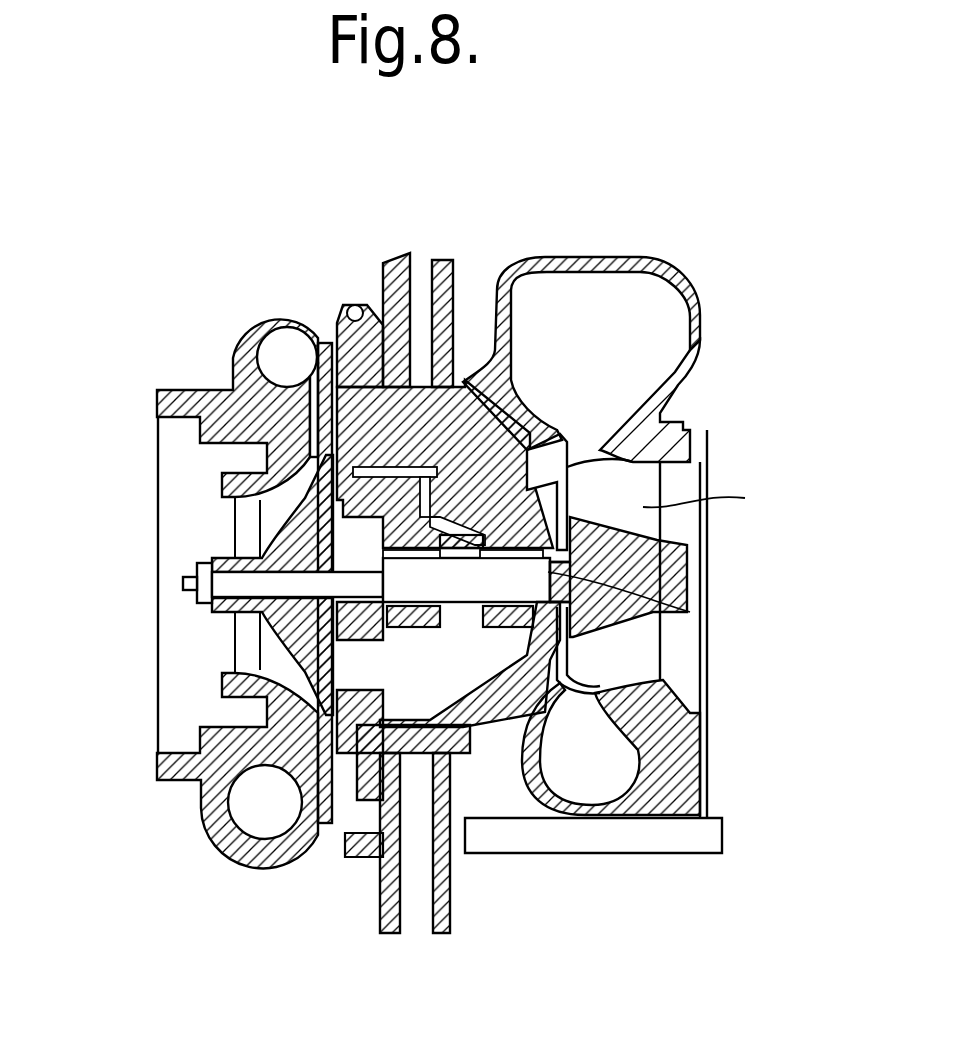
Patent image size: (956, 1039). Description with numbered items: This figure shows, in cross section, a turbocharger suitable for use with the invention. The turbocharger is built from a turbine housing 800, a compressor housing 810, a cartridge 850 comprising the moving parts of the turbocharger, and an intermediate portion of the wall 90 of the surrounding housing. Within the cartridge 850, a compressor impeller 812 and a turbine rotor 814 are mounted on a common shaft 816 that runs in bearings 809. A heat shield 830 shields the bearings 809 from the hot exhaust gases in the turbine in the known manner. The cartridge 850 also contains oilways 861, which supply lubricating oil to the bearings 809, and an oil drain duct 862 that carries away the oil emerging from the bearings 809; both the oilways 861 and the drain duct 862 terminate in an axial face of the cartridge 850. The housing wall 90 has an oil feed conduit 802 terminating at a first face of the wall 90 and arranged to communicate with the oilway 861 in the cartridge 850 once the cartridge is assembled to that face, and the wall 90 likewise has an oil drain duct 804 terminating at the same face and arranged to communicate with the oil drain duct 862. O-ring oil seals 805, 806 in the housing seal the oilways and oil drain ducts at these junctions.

The wall 90 is at (457, 282).
The turbine housing 800 is at (703, 328).
The oil feed conduit 802 is at (420, 273).
The oil drain duct 804 is at (418, 912).
The O ring oil seal 805 is at (372, 365).
The O ring oil seal 806 is at (392, 842).
The bearings 809 is at (490, 633).
The compressor housing 810 is at (207, 817).
The compressor impeller 812 is at (283, 622).
The turbine rotor 814 is at (731, 509).
The common shaft 816 is at (637, 628).
The heat shield 830 is at (562, 480).
The cartridge 850 is at (497, 443).
The oilways 861 is at (292, 350).
The oil drain duct 862 is at (315, 790).